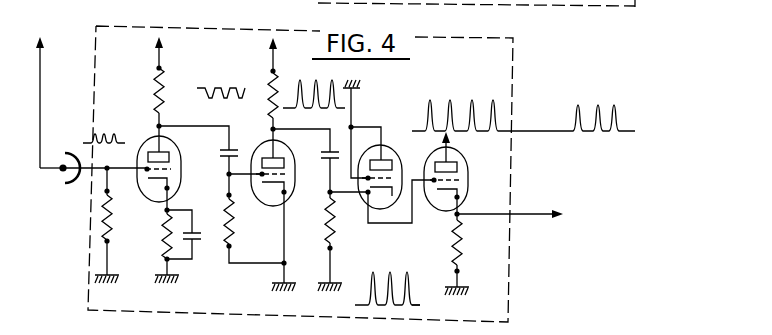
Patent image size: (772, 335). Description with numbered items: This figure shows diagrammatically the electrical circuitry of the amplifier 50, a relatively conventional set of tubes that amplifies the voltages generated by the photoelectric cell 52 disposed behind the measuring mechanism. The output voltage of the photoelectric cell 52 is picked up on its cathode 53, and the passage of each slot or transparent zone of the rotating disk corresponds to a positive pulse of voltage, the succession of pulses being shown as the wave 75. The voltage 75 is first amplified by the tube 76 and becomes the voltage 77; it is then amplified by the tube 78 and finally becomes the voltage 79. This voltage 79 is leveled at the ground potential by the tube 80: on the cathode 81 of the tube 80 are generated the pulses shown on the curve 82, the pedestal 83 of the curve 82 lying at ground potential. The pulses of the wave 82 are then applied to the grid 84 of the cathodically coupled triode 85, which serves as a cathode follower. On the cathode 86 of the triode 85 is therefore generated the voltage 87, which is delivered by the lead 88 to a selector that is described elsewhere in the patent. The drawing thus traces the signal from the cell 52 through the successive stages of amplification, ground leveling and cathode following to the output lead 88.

The amplifier 50 is at (185, 26).
The photoelectric cell 52 is at (57, 186).
The cathode 53 is at (78, 181).
The wave 75 is at (91, 138).
The tube 76 is at (181, 170).
The voltage 77 is at (217, 87).
The tube 78 is at (263, 143).
The voltage 79 is at (302, 83).
The tube 80 is at (371, 195).
The cathode 81 is at (381, 190).
The curve 82 is at (408, 276).
The pedestal 83 is at (426, 302).
The grid 84 is at (459, 182).
The cathodically coupled triode 85 is at (467, 164).
The cathode 86 is at (438, 190).
The voltage 87 is at (543, 131).
The lead 88 is at (537, 212).